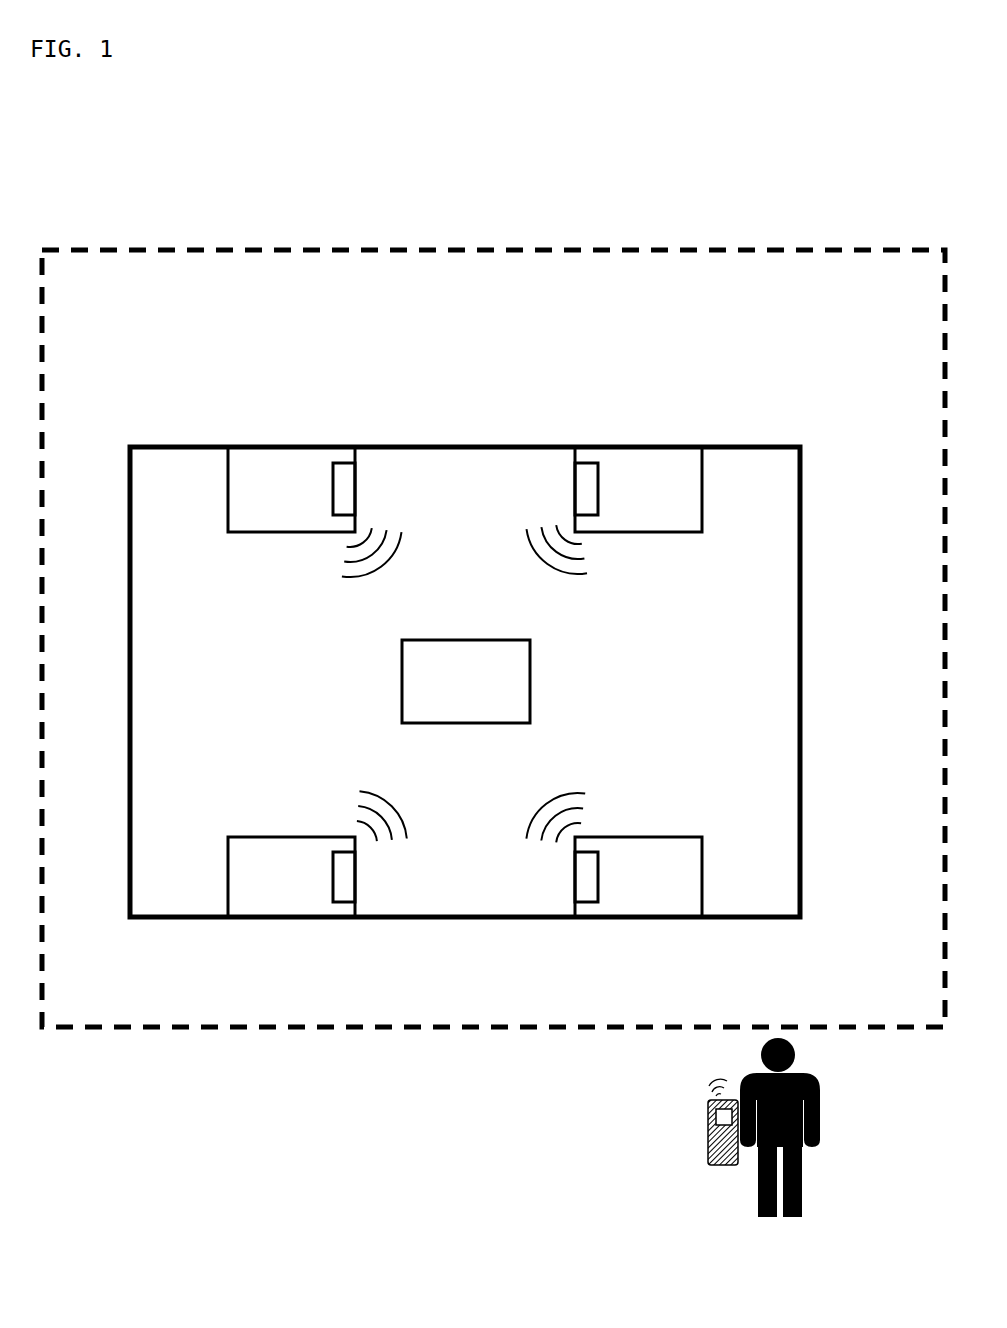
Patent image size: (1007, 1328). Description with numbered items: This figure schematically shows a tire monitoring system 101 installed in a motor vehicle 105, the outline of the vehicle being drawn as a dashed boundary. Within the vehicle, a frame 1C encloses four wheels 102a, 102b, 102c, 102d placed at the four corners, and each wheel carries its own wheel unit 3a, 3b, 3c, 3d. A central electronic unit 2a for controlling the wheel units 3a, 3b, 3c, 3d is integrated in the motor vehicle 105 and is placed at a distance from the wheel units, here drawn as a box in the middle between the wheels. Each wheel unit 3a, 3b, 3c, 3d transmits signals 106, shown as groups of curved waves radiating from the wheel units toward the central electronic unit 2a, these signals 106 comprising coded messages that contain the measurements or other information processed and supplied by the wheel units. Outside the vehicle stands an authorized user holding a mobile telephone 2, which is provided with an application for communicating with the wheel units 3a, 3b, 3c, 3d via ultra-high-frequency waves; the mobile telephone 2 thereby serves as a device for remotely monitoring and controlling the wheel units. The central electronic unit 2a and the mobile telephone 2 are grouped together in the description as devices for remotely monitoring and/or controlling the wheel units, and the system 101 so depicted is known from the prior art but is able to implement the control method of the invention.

The motor vehicle 105 is at (140, 250).
The tire monitoring system 101 is at (778, 350).
The room 1C is at (803, 488).
The wheel 102a is at (243, 472).
The wheel 102b is at (683, 477).
The wheel 102c is at (243, 887).
The wheel 102d is at (685, 885).
The wheel unit 3a is at (340, 465).
The wheel unit 3b is at (585, 462).
The wheel unit 3c is at (340, 887).
The wheel unit 3d is at (583, 903).
The central electronic unit 2a is at (472, 660).
The signals 106 is at (340, 575).
The mobile telephone 2 is at (705, 1120).